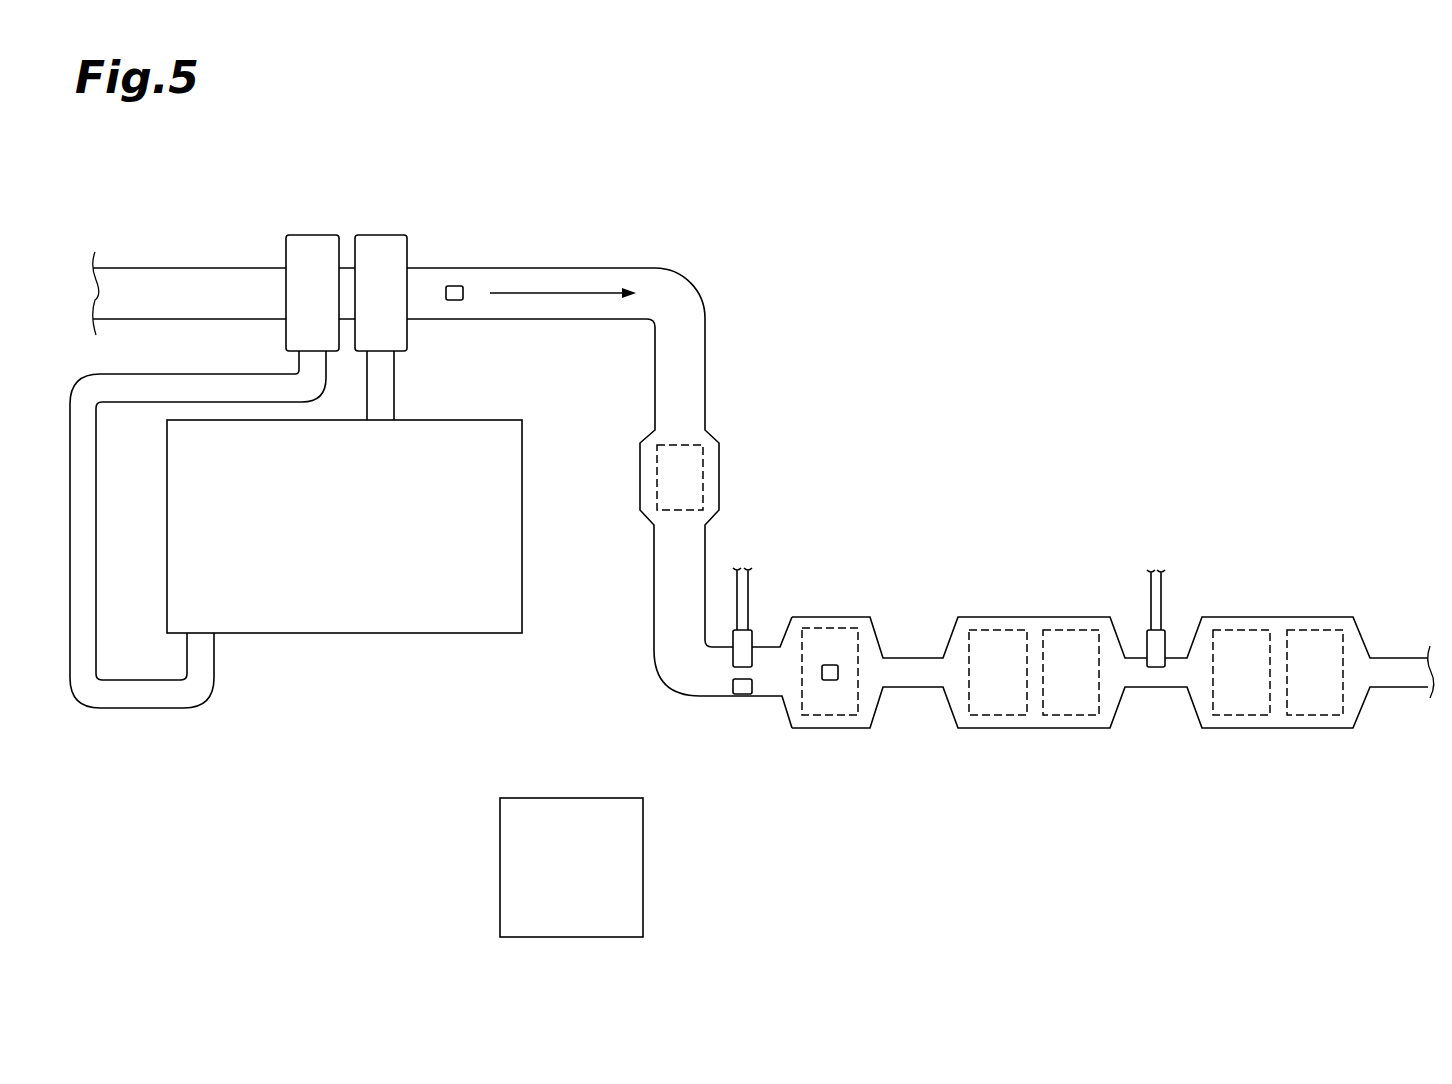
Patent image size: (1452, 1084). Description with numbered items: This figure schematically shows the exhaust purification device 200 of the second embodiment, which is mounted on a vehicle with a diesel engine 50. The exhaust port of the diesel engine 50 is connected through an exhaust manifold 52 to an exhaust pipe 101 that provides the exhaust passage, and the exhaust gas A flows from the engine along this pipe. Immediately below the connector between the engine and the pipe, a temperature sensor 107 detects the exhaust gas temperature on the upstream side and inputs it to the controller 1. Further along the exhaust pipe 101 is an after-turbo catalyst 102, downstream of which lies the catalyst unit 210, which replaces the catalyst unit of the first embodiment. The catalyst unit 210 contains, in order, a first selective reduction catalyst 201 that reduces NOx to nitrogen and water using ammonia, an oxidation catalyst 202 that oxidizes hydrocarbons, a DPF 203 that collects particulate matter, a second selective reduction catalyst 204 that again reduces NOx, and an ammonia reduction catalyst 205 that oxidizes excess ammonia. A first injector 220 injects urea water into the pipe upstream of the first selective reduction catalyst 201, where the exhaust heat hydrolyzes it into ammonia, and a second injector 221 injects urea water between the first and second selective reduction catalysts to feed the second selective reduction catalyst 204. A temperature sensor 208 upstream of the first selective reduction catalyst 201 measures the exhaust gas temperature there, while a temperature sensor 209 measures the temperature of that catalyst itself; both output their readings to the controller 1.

The controller 1 is at (500, 865).
The diesel engine 50 is at (334, 633).
The exhaust manifold 52 is at (395, 383).
The exhaust pipe 101 is at (585, 280).
The after-turbo catalyst 102 is at (703, 467).
The temperature sensor 107 is at (455, 285).
The exhaust purification device 200 is at (1004, 372).
The first selective reduction catalyst 201 is at (860, 695).
The oxidation catalyst 202 is at (998, 716).
The DPF 203 is at (1080, 716).
The second selective reduction catalyst 204 is at (1242, 716).
The ammonia reduction catalyst 205 is at (1323, 716).
The temperature sensor 208 is at (742, 695).
The temperature sensor 209 is at (828, 681).
The catalyst unit 210 is at (1083, 750).
The first injector 220 is at (750, 607).
The second injector 221 is at (1163, 600).
The exhaust gas A is at (556, 294).